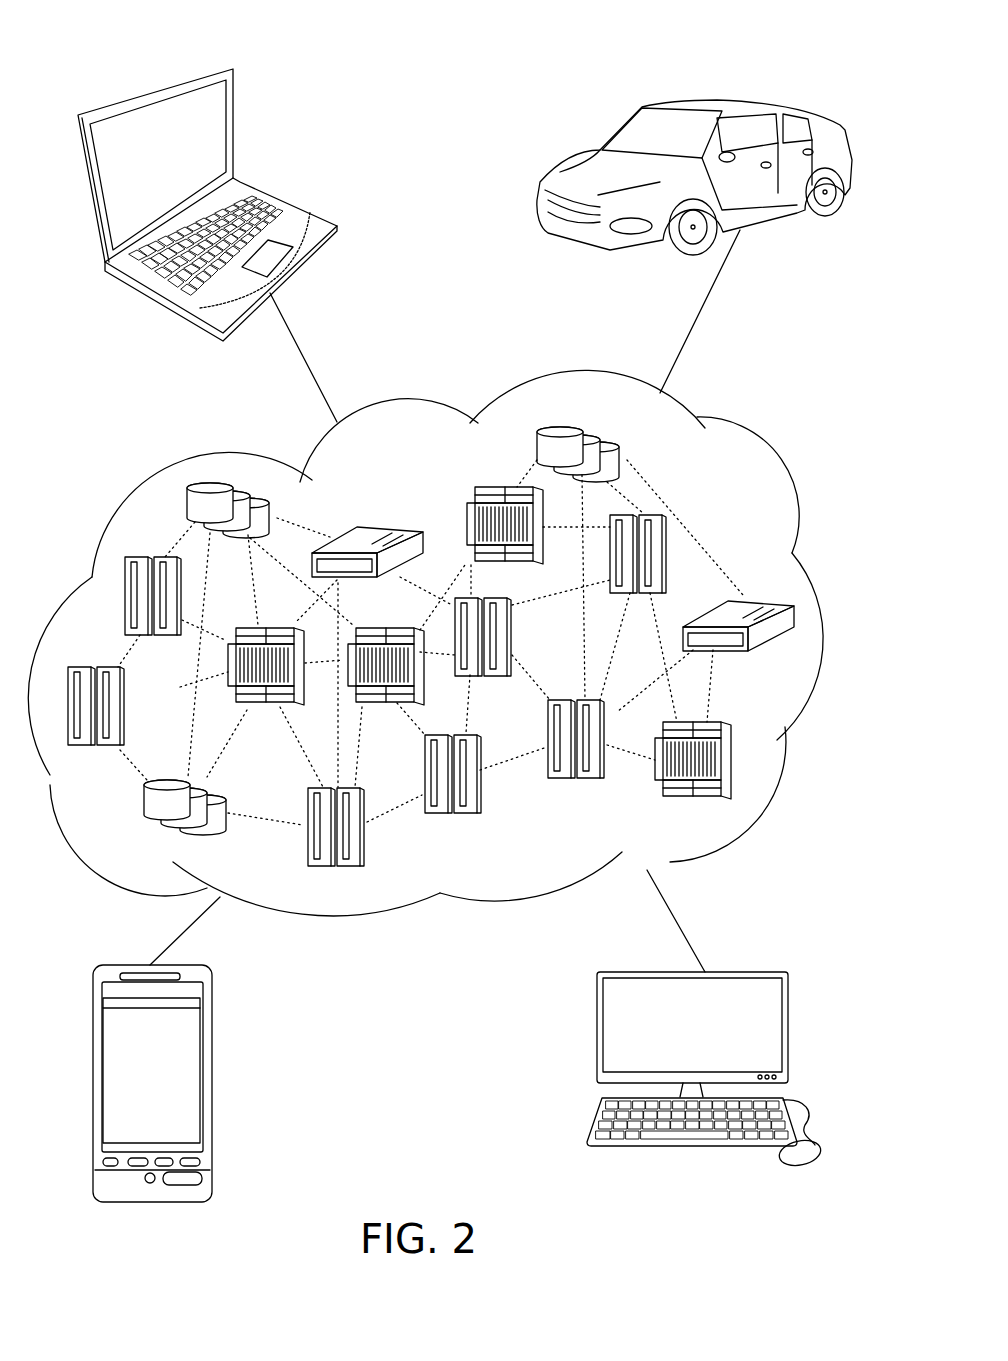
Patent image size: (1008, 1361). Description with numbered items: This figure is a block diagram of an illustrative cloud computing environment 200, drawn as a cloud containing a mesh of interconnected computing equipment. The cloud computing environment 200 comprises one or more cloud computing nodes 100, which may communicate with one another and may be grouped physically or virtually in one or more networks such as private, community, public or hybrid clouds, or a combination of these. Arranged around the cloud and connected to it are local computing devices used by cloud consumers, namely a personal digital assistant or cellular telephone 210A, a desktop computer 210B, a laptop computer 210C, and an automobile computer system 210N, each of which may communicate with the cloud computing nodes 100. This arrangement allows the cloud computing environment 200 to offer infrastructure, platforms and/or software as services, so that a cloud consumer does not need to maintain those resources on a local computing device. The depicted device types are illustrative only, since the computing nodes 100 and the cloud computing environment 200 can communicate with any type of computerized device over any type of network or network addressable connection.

The cloud computing node 100 is at (763, 596).
The cloud computing environment 200 is at (767, 440).
The personal digital assistant or cellular telephone 210A is at (207, 992).
The desktop computer 210B is at (788, 990).
The laptop computer 210C is at (337, 178).
The automobile computer system 210N is at (803, 115).